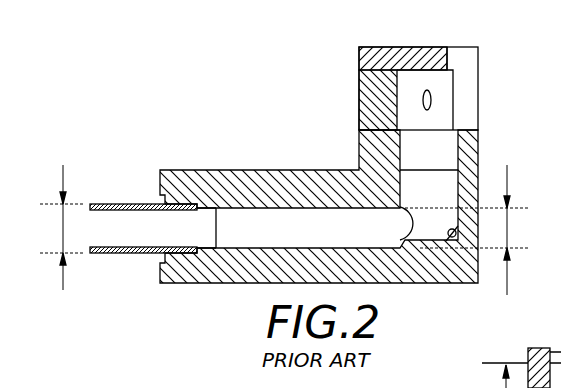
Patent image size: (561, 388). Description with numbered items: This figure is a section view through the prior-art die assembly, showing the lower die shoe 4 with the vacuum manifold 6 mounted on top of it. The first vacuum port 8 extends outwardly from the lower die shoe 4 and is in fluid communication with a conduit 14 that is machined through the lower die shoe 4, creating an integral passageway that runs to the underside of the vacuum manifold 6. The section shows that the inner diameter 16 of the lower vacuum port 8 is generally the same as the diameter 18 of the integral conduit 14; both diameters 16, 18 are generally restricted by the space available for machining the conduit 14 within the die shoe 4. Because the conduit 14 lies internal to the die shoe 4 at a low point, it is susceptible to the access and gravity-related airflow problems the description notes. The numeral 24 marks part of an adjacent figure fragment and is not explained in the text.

The lower die shoe 4 is at (458, 231).
The vacuum manifold 6 is at (370, 102).
The first vacuum port 8 is at (118, 203).
The conduit 14 is at (270, 233).
The inner diameter 16 is at (64, 170).
The diameter 18 is at (509, 222).
The valve body (next figure) 24 is at (513, 368).